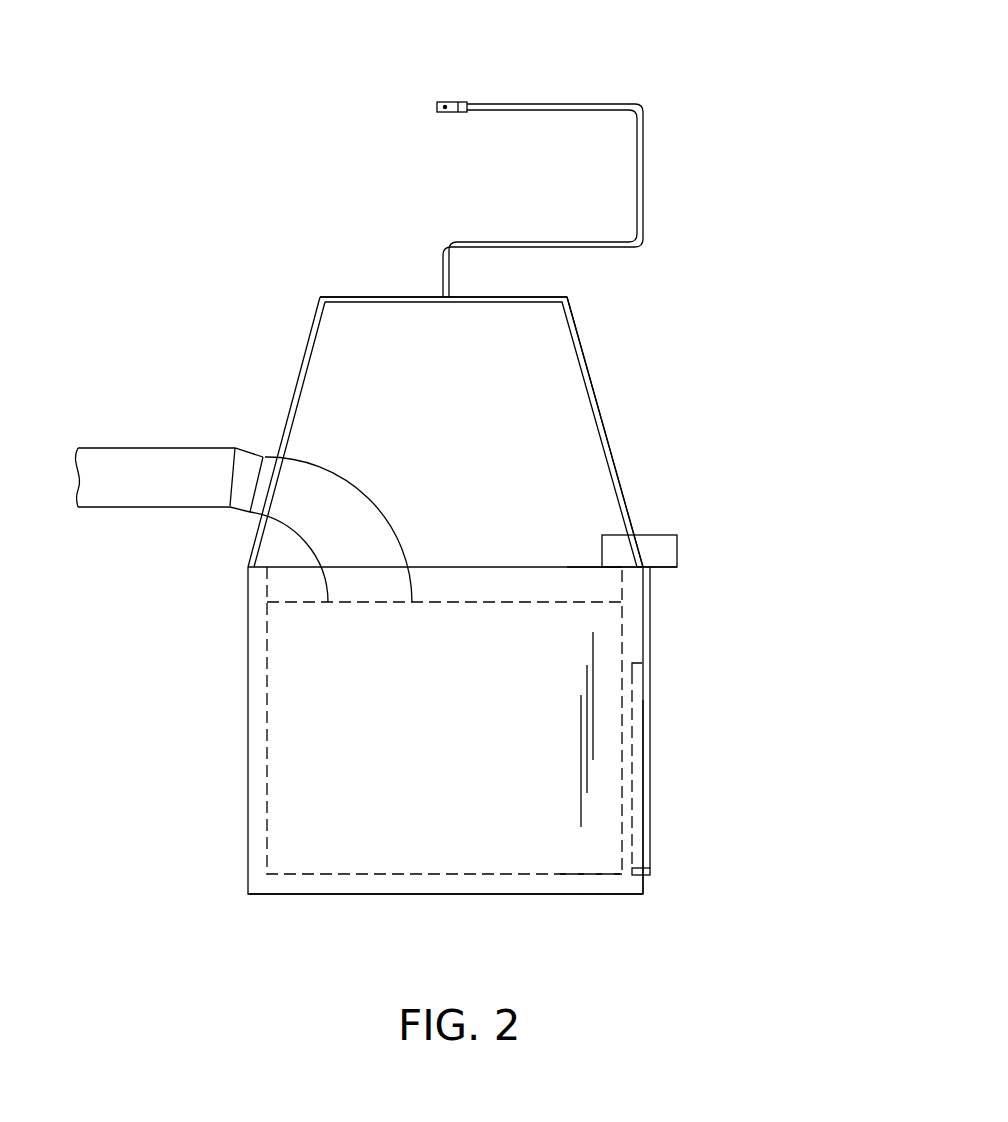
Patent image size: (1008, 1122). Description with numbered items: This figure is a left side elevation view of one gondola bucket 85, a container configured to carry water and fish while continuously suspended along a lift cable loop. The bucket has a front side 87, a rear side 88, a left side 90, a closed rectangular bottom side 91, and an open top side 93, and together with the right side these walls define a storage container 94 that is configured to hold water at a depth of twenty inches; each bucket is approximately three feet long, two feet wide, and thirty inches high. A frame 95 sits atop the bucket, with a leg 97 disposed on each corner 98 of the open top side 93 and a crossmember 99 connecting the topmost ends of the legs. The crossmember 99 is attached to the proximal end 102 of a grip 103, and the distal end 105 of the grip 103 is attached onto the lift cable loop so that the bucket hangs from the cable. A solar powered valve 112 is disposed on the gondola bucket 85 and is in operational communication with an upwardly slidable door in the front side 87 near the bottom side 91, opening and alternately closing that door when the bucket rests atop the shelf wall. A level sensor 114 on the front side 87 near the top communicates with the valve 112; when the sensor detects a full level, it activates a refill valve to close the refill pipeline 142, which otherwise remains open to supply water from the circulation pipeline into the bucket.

The gondola bucket 85 is at (292, 262).
The front side 87 is at (642, 810).
The rear side 88 is at (248, 750).
The left side 90 is at (535, 884).
The closed rectangular bottom side 91 is at (318, 894).
The open top side 93 is at (577, 567).
The storage container 94 is at (578, 875).
The frame 95 is at (615, 417).
The leg 97 is at (625, 492).
The corner 98 is at (643, 567).
The crossmember 99 is at (517, 297).
The proximal end 102 is at (448, 297).
The grip 103 is at (643, 178).
The distal end 105 is at (470, 102).
The solar powered valve 112 is at (622, 768).
The level sensor 114 is at (677, 535).
The refill pipeline 142 is at (157, 464).